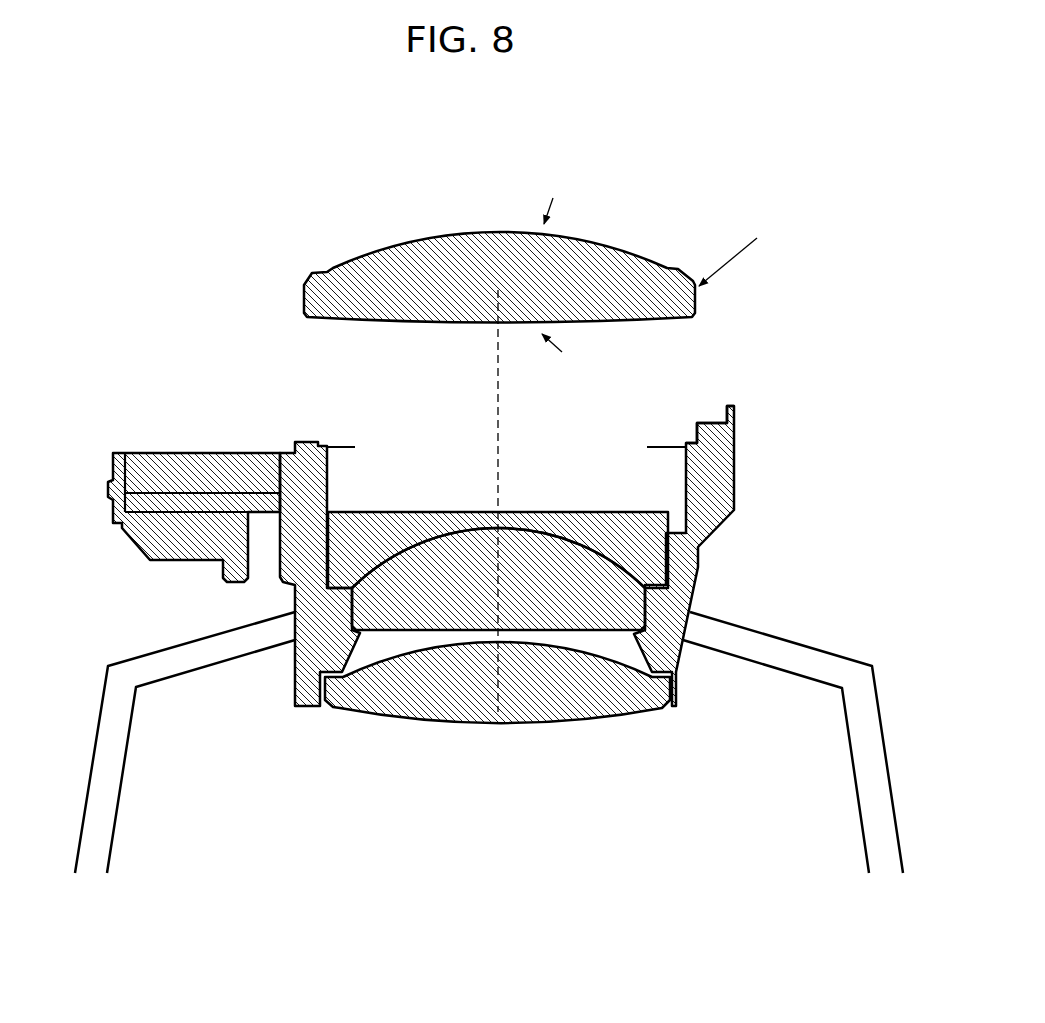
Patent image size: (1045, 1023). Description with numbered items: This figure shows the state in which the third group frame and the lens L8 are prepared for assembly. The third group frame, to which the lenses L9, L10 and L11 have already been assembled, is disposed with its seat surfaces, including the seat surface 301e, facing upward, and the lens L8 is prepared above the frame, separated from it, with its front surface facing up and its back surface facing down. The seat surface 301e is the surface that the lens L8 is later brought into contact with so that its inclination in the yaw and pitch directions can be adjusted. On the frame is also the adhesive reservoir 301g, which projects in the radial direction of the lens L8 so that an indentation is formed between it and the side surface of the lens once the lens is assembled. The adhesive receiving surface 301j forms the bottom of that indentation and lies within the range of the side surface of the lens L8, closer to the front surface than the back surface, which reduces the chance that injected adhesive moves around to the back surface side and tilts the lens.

The lens L8 is at (383, 237).
The lens L9 is at (648, 570).
The lens L10 is at (596, 618).
The lens L11 is at (513, 685).
The seat surface 301e is at (300, 440).
The adhesive receiving surface 301j is at (706, 421).
The adhesive reservoir 301g is at (735, 442).